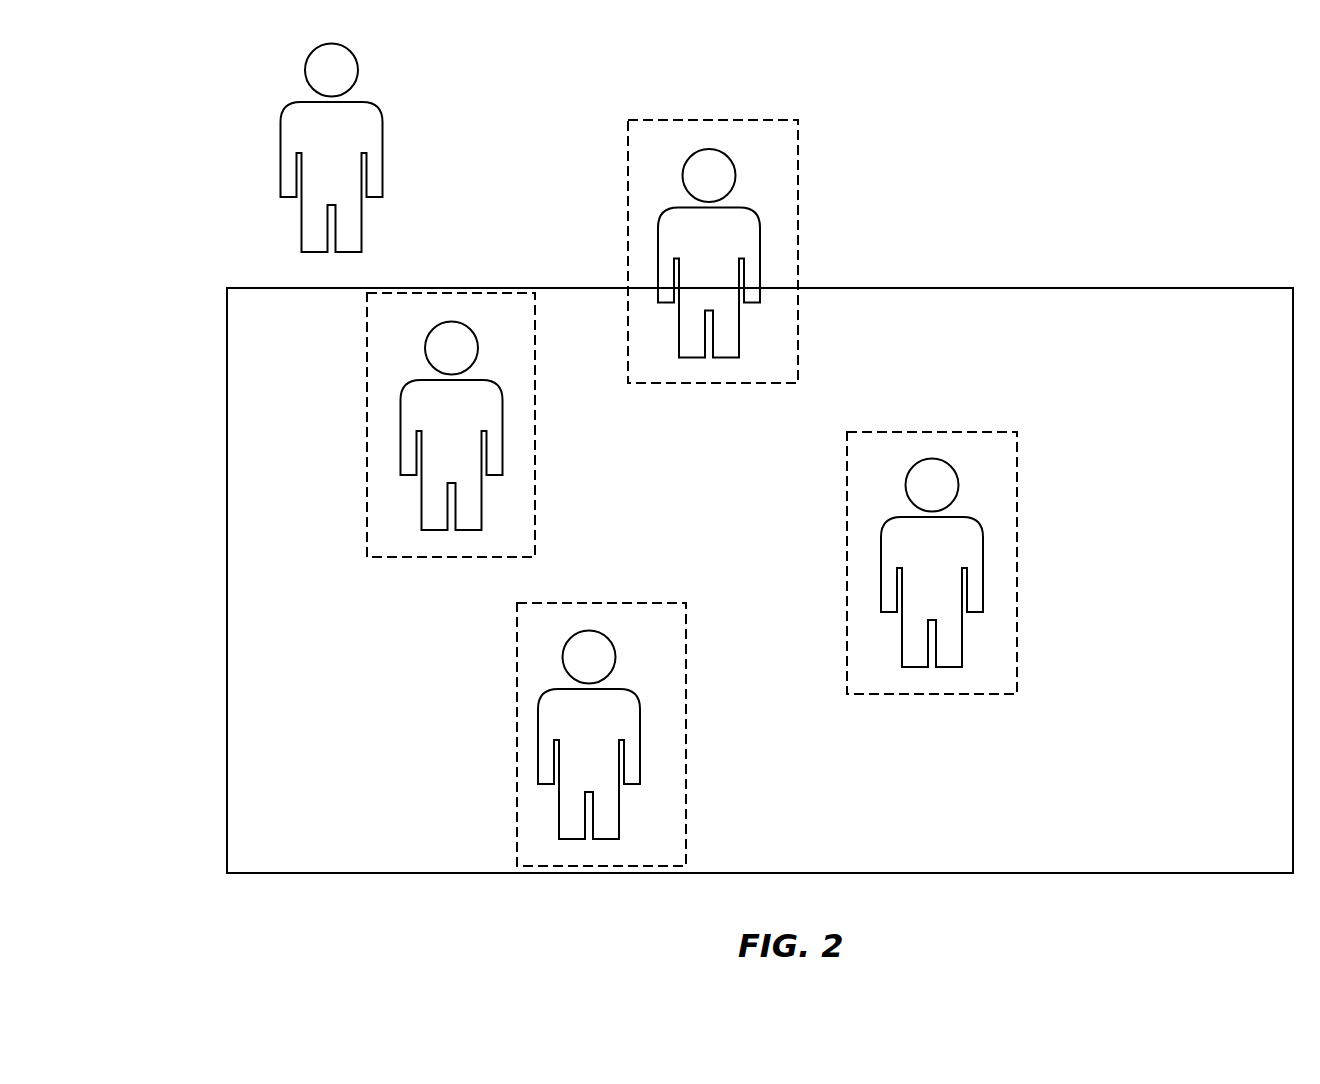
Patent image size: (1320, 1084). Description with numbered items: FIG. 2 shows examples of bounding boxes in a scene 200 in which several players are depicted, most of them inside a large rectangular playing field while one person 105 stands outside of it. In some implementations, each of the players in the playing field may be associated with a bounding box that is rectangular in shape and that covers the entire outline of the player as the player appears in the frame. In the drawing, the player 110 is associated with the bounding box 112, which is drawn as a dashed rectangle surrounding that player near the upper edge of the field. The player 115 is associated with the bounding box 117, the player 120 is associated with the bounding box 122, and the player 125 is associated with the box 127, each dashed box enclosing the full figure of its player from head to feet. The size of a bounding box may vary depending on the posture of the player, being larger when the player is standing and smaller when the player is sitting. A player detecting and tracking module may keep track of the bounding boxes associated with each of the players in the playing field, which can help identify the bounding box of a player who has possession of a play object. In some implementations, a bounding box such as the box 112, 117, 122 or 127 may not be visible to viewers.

The environment / scene 200 is at (217, 176).
The first person 105 is at (387, 147).
The player 110 is at (762, 232).
The bounding box 112 is at (800, 148).
The player 115 is at (497, 448).
The bounding box 117 is at (535, 532).
The player 120 is at (983, 560).
The bounding box 122 is at (1017, 468).
The player 125 is at (635, 748).
The box 127 is at (686, 830).